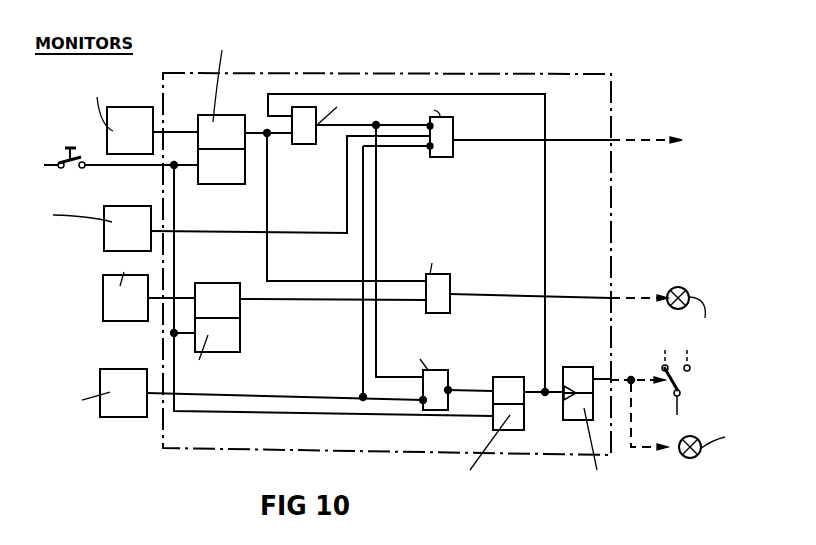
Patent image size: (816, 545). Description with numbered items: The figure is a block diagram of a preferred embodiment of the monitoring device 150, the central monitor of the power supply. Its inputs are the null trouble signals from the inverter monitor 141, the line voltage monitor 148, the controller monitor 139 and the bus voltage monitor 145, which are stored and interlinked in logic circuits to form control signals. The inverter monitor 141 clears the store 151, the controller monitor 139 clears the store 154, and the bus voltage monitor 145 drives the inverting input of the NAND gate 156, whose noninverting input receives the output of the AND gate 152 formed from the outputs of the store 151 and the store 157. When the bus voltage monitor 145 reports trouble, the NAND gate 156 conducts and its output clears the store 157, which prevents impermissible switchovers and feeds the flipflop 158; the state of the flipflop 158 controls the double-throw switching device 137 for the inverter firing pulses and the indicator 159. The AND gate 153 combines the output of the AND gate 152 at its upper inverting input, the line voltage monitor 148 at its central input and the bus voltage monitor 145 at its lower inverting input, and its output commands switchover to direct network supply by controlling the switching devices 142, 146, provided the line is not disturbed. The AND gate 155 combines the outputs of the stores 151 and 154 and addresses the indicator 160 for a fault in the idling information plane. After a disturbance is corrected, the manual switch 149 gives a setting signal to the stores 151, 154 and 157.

The double-throw switching device 137 is at (681, 379).
The controller monitor 139 is at (103, 298).
The inverter monitor 141 is at (129, 107).
The switching device 142 is at (684, 140).
The bus voltage monitor 145 is at (118, 369).
The switching device 146 is at (684, 140).
The line voltage monitor 148 is at (104, 234).
The manual switch 149 is at (69, 170).
The monitoring device 150 is at (554, 456).
The store (flipflop) 151 is at (213, 184).
The AND gate 152 is at (303, 145).
The AND gate 153 is at (441, 158).
The store (flipflop) 154 is at (238, 336).
The AND gate 155 is at (450, 282).
The NAND gate 156 is at (447, 370).
The store (flipflop) 157 is at (509, 377).
The flipflop 158 is at (580, 367).
The indicator 159 is at (684, 458).
The indicator 160 is at (674, 287).